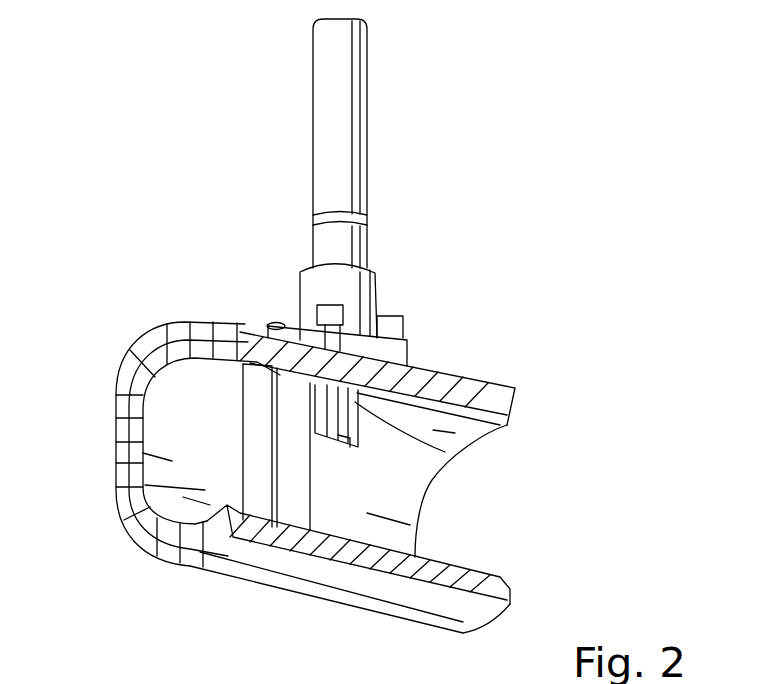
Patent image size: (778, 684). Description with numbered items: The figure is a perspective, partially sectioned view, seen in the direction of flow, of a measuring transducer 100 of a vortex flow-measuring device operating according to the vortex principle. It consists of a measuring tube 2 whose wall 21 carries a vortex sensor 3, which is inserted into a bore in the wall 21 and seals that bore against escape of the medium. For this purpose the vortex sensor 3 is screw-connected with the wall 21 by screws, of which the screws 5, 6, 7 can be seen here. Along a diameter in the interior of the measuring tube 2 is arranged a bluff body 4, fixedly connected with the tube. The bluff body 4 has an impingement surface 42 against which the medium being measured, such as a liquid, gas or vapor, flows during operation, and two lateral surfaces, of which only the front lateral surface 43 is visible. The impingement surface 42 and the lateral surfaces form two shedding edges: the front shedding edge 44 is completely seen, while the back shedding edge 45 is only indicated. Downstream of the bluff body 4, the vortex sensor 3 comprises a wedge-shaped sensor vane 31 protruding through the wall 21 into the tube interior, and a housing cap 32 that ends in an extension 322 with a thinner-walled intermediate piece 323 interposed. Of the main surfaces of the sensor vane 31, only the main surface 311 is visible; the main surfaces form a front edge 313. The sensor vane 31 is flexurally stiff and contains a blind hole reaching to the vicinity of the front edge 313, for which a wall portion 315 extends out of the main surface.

The connecting device 100 is at (232, 240).
The measuring tube 2 is at (127, 383).
The wall 21 is at (178, 334).
The vortex sensor 3 is at (365, 288).
The sensor vane 31 is at (445, 451).
The housing cap 32 is at (397, 352).
The main surface 311 is at (352, 443).
The front edge 313 is at (350, 443).
The wall portion 315 is at (333, 442).
The extension 322 is at (358, 130).
The intermediate piece 323 is at (353, 245).
The bluff body 4 is at (229, 447).
The impingement surface 42 is at (260, 408).
The lateral surface 43 is at (298, 500).
The shedding edge 44 is at (235, 482).
The shedding edge 45 is at (237, 436).
The screw 5 is at (405, 318).
The screw 6 is at (330, 305).
The screw 7 is at (268, 323).